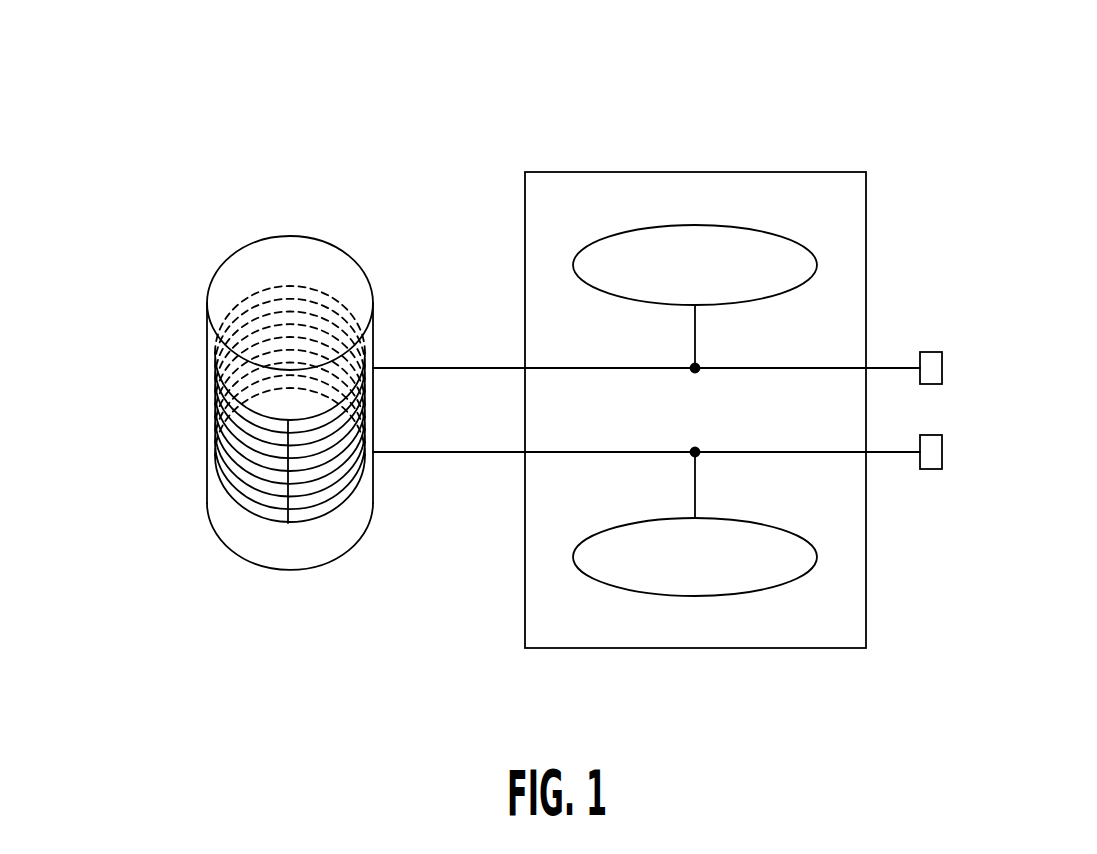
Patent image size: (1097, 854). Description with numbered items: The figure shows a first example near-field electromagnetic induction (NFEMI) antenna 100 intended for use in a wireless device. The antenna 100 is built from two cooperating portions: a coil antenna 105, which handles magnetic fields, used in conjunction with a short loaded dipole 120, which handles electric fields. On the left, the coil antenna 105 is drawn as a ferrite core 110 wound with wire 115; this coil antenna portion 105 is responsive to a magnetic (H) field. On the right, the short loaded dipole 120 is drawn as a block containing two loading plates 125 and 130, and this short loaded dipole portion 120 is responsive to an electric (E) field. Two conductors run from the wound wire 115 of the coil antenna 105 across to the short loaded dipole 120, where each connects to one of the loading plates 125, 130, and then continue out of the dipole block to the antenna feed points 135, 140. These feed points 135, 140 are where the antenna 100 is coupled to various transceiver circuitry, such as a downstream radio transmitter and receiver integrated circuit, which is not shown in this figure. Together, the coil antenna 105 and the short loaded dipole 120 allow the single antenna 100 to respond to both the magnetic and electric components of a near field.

The near-field electromagnetic induction antenna 100 is at (318, 116).
The coil antenna 105 is at (205, 200).
The ferrite core 110 is at (209, 283).
The wire 115 is at (207, 438).
The short loaded dipole 120 is at (553, 172).
The loading plate 125 is at (814, 253).
The loading plate 130 is at (817, 555).
The feed point 135 is at (942, 370).
The feed point 140 is at (942, 450).